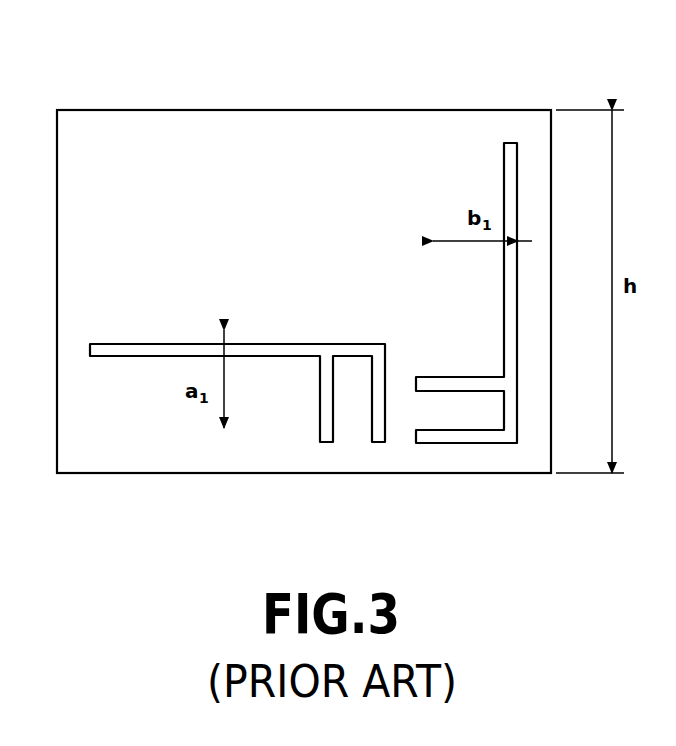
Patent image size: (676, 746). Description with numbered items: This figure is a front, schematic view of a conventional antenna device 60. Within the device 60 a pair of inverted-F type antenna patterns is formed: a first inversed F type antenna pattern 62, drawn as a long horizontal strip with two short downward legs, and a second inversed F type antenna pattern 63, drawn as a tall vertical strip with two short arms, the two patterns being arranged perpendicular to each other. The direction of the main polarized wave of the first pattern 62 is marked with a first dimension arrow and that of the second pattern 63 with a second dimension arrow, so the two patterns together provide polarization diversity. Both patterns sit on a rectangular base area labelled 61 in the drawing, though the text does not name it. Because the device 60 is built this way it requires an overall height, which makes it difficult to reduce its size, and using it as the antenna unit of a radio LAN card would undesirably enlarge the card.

The antenna device 60 is at (432, 45).
The substrate / ground plane 61 is at (241, 123).
The first inversed F type antenna pattern 62 is at (287, 350).
The second inversed F type antenna pattern 63 is at (486, 436).